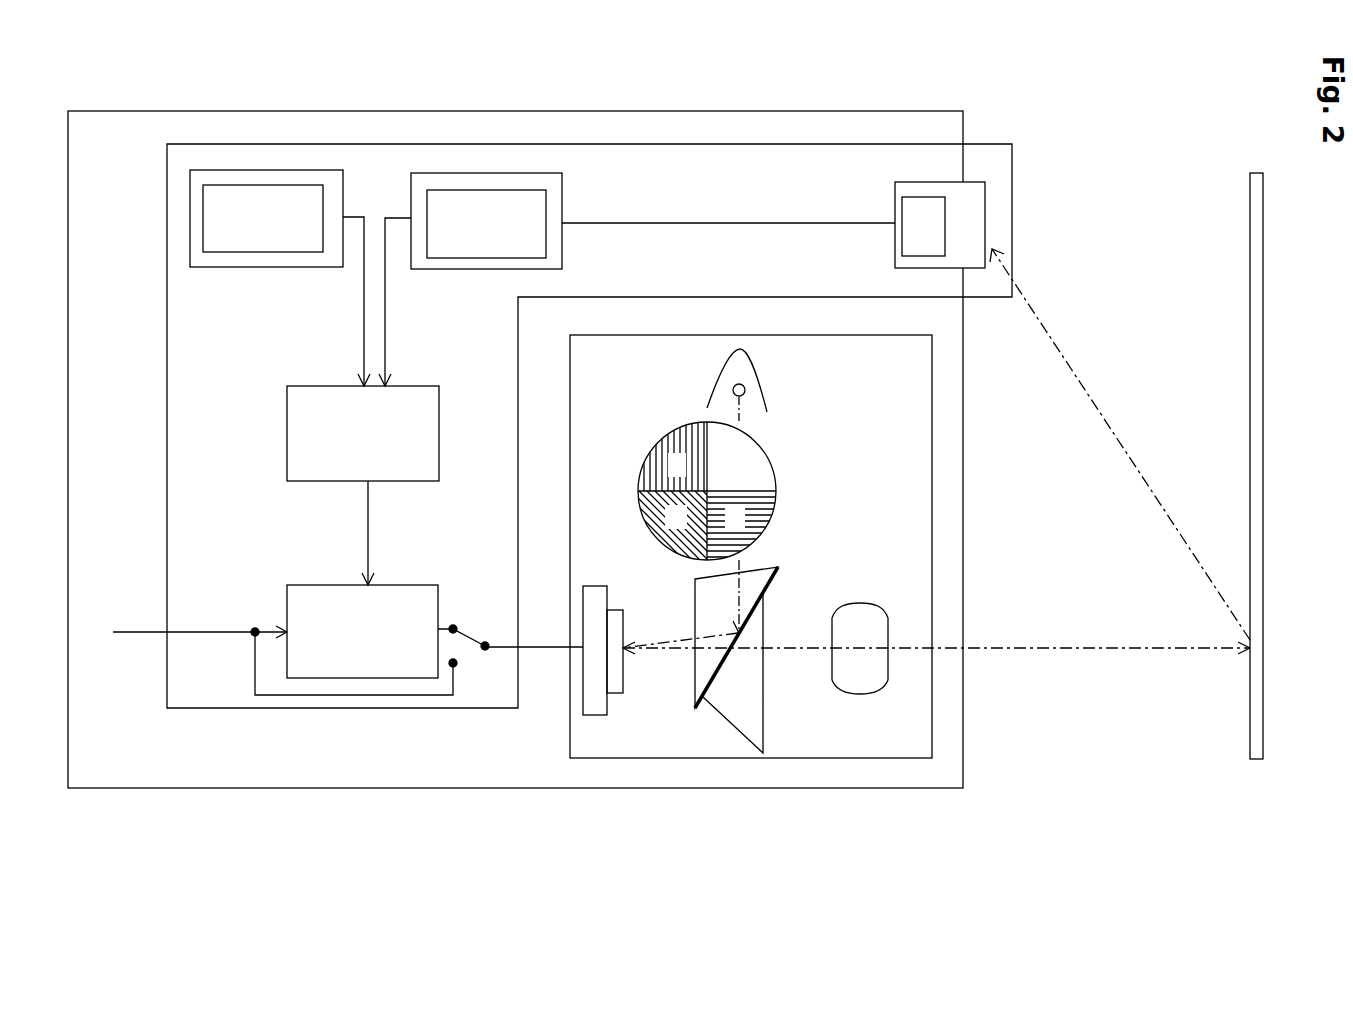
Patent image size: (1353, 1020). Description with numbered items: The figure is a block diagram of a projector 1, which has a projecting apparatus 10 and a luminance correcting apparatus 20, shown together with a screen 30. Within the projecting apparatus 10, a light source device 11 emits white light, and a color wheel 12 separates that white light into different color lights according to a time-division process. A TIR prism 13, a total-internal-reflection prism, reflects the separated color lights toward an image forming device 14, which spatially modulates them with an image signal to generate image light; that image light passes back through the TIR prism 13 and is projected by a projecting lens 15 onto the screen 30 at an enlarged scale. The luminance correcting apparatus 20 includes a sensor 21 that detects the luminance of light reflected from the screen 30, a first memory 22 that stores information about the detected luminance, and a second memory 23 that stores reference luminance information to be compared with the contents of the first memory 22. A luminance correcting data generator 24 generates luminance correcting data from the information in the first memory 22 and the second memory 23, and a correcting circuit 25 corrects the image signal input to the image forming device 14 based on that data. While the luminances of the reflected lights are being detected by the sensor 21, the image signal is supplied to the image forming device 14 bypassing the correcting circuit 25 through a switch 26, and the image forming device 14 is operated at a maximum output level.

The projector 1 is at (250, 790).
The projecting apparatus 10 is at (932, 533).
The light source device 11 is at (760, 388).
The color wheel 12 is at (776, 497).
The TIR prism 13 is at (728, 732).
The image forming device 14 is at (595, 715).
The projecting lens 15 is at (855, 694).
The luminance correcting apparatus 20 is at (640, 144).
The sensor 21 is at (916, 197).
The first memory 22 is at (447, 173).
The second memory 23 is at (229, 170).
The luminance correcting data generator 24 is at (411, 386).
The correcting circuit 25 is at (409, 585).
The switch 26 is at (485, 650).
The screen 30 is at (1250, 712).